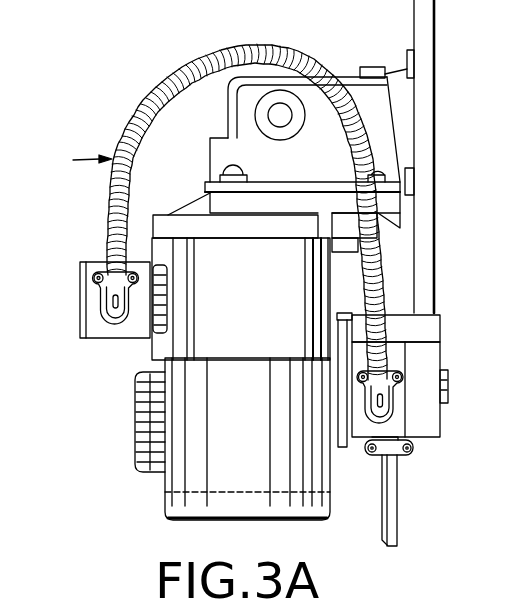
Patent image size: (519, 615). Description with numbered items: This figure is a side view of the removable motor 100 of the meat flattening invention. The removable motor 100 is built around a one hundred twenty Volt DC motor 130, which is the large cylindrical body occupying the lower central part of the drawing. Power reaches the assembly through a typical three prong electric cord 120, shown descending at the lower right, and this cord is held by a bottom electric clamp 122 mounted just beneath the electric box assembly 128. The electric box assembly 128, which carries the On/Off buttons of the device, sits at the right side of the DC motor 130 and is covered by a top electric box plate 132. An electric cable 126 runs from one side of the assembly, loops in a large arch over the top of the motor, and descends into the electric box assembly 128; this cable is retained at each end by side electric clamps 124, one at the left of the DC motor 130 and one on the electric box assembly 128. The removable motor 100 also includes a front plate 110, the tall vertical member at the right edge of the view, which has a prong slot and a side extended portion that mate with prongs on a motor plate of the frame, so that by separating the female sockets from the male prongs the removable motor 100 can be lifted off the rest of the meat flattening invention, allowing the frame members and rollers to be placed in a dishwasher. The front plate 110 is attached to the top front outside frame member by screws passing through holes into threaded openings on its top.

The removable motor 100 is at (112, 90).
The front plate 110 is at (420, 145).
The three prong electric cord 120 is at (398, 525).
The bottom electric clamp 122 is at (412, 452).
The side electric clamps 124 is at (98, 273).
The electric cable 126 is at (290, 65).
The electric box assembly 128 is at (422, 418).
The DC motor 130 is at (263, 455).
The top electric box plate 132 is at (427, 332).